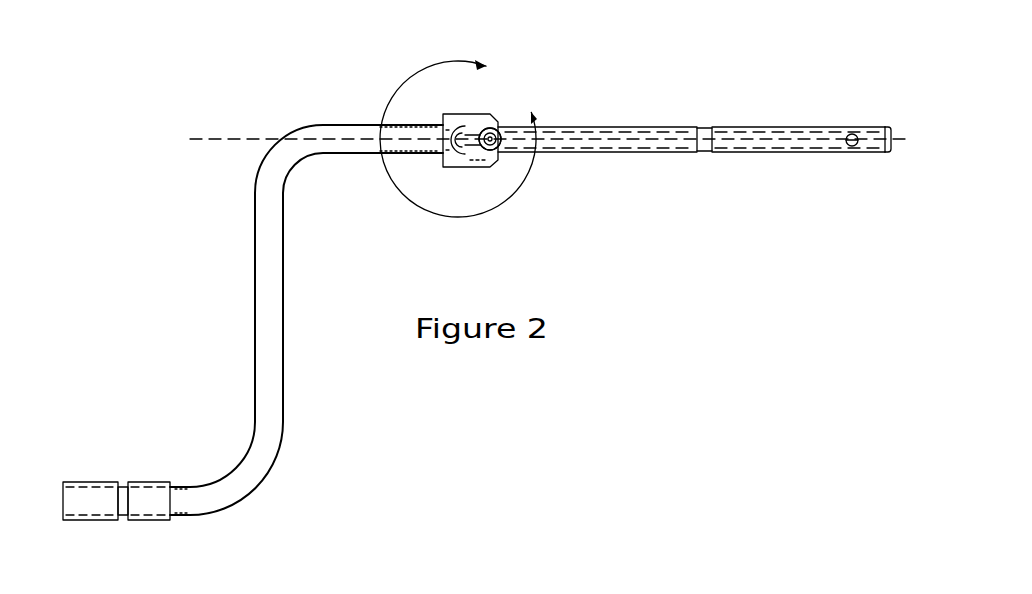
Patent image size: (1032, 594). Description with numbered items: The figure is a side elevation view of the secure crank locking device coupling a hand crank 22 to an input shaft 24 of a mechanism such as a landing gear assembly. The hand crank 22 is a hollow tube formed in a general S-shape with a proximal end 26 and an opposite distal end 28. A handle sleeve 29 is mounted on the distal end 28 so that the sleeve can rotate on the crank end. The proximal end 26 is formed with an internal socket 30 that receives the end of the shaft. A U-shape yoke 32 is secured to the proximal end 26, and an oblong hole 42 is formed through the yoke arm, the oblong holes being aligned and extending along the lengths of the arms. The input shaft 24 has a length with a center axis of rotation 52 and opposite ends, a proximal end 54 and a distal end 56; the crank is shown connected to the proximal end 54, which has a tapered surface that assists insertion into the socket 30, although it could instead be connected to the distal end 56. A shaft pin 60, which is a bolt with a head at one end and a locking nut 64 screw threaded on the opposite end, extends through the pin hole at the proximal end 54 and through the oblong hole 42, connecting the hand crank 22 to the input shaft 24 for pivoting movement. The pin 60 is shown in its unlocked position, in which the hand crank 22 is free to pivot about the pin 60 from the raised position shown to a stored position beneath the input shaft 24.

The hand crank 22 is at (258, 290).
The input shaft 24 is at (630, 137).
The proximal end 26 is at (418, 125).
The distal end 28 is at (183, 518).
The handle sleeve 29 is at (95, 482).
The internal socket 30 is at (440, 150).
The U-shape yoke 32 is at (462, 172).
The oblong hole 42 is at (474, 122).
The center axis of rotation 52 is at (213, 138).
The proximal end 54 is at (486, 160).
The distal end 56 is at (840, 126).
The shaft pin 60 is at (500, 128).
The locking nut 64 is at (500, 150).